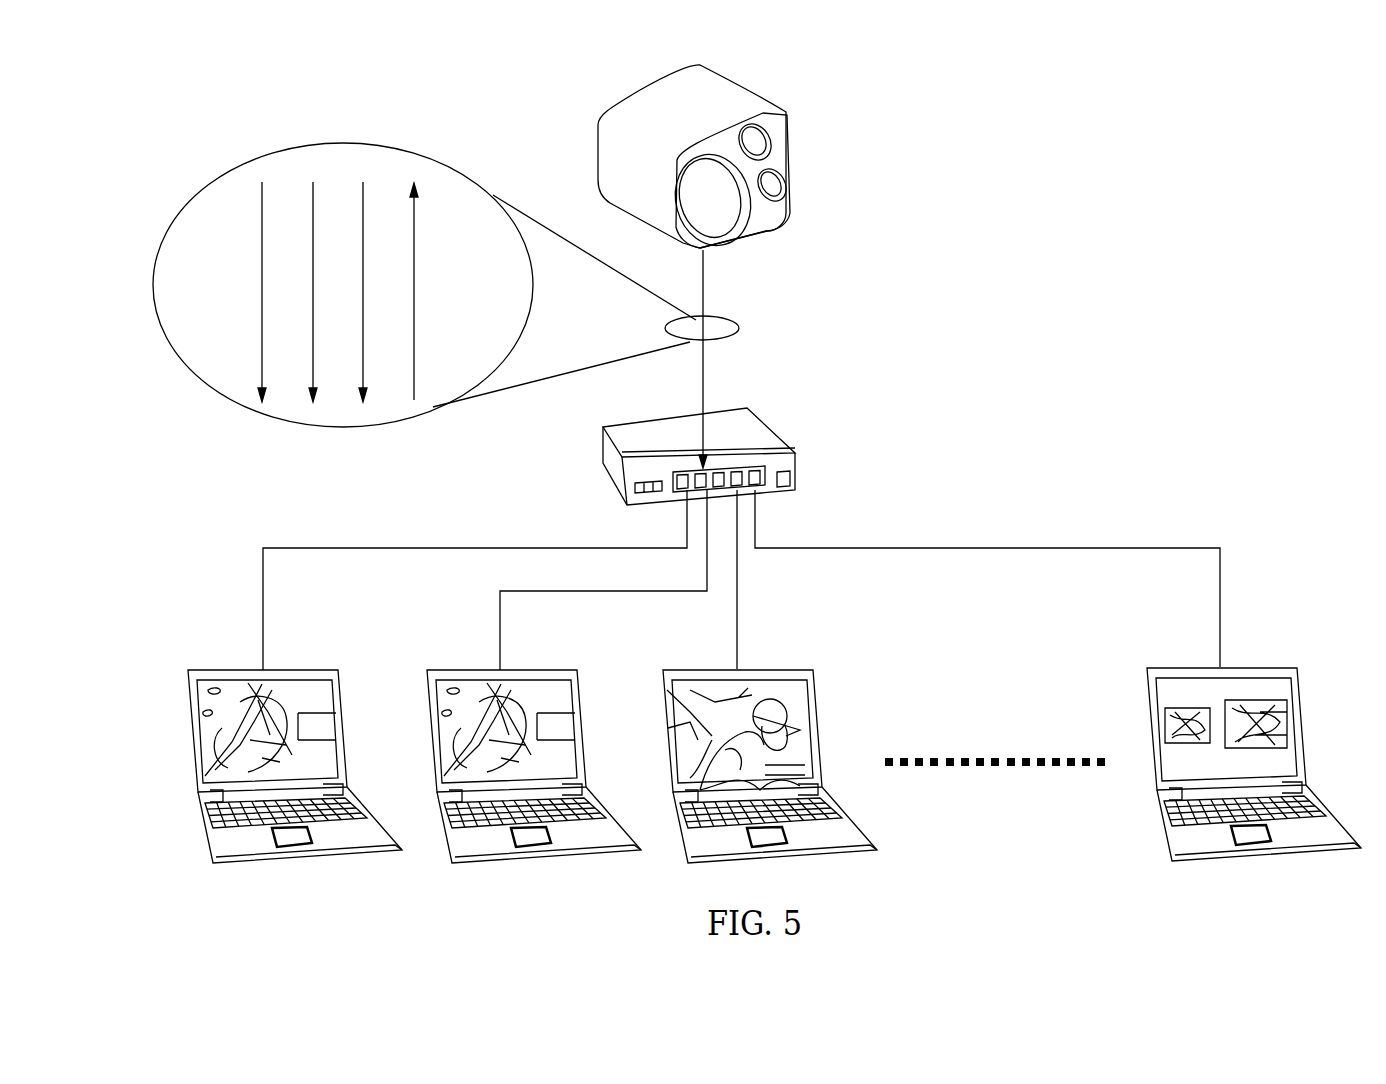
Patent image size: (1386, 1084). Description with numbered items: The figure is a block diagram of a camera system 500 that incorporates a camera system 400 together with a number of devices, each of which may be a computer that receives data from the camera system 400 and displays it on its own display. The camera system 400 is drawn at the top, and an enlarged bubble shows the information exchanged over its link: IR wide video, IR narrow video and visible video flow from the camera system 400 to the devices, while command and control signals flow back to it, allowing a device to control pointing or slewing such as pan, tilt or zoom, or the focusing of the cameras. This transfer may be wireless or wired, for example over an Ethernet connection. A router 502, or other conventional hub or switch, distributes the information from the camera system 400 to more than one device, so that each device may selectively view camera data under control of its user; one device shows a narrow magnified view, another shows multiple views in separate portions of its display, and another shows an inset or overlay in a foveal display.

The camera system 400 is at (804, 138).
The camera system 500 is at (1095, 312).
The router 502 is at (798, 462).